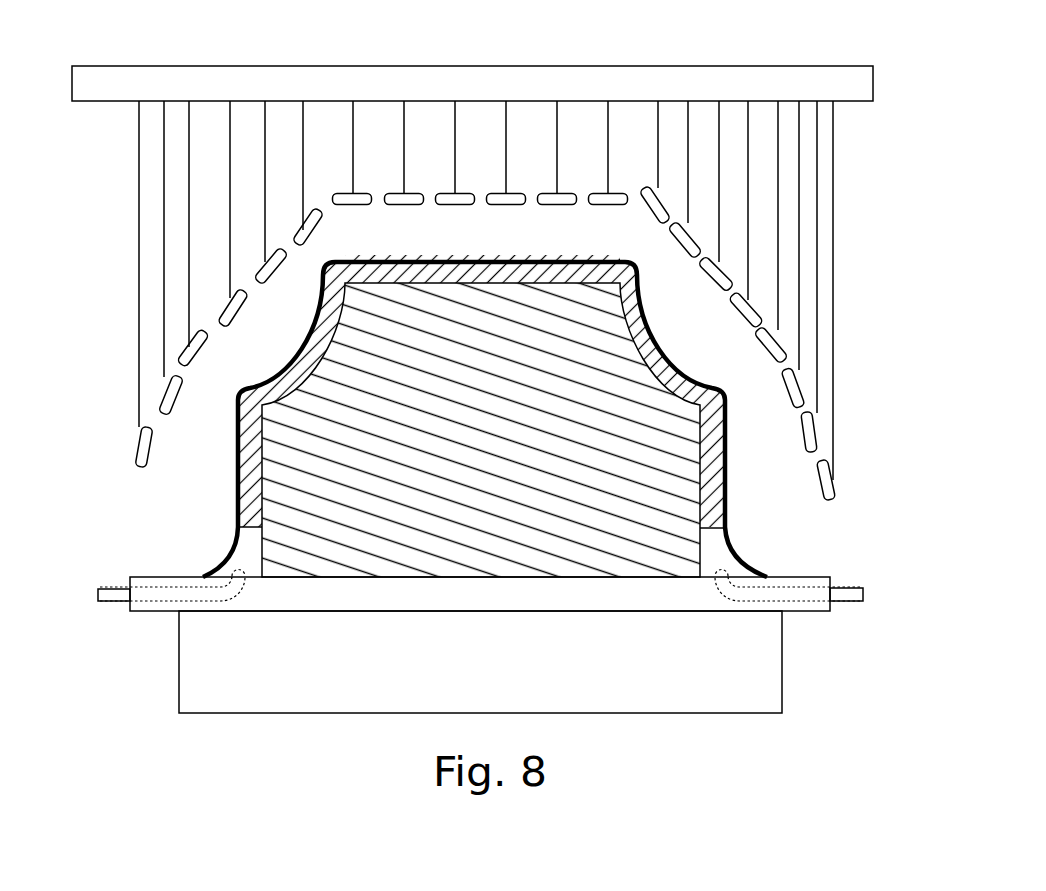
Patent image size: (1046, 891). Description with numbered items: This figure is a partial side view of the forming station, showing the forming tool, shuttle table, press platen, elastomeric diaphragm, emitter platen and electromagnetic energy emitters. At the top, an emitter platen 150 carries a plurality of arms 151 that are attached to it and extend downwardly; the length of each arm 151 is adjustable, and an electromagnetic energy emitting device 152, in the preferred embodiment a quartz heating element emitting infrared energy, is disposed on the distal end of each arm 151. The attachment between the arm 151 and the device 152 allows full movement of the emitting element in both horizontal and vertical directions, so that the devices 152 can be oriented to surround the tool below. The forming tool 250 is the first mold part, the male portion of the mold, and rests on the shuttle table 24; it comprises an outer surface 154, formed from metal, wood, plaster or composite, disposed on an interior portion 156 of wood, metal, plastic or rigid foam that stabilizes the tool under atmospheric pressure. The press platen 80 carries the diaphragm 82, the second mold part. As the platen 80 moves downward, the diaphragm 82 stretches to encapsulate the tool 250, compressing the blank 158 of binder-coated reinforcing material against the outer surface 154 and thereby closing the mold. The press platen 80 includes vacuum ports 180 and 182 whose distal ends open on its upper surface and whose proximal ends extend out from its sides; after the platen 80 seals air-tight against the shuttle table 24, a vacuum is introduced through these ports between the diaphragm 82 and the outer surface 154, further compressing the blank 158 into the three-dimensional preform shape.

The emitter platen 150 is at (688, 66).
The arm 151 is at (230, 190).
The electromagnetic energy emitting device 152 is at (778, 345).
The outer surface 154 is at (243, 473).
The interior portion 156 is at (485, 436).
The blank 158 is at (485, 419).
The forming tool 250 is at (465, 283).
The press platen 80 is at (491, 603).
The diaphragm 82 is at (740, 545).
The vacuum port 180 is at (838, 588).
The vacuum port 182 is at (115, 587).
The shuttle table 24 is at (495, 671).